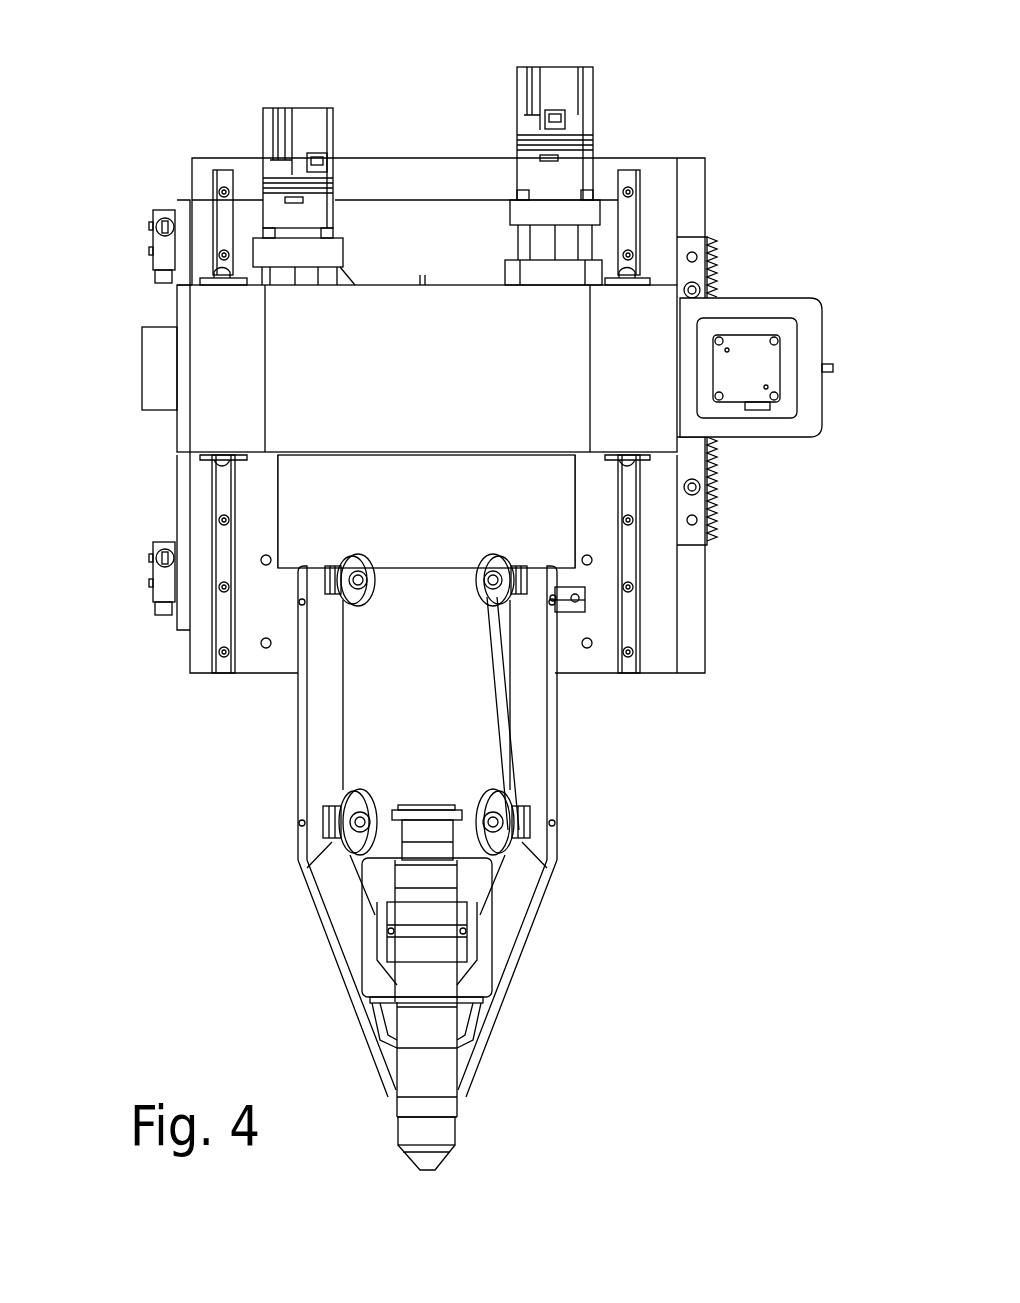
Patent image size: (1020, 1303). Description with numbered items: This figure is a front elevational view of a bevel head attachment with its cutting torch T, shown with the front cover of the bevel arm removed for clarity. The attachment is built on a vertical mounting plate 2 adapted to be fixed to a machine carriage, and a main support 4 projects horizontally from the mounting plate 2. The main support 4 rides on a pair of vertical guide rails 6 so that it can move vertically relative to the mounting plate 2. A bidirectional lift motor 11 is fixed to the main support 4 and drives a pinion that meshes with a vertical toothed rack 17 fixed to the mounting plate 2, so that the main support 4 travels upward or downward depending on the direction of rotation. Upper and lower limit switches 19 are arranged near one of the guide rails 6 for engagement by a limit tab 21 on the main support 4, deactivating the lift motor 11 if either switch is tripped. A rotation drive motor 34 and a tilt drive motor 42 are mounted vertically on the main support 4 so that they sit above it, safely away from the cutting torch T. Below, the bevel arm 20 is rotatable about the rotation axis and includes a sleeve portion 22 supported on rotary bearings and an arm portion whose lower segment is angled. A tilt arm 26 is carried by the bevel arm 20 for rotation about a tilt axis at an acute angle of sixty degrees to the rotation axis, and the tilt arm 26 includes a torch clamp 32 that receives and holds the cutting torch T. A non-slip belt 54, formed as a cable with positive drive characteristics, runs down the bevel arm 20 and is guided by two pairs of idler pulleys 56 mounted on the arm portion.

The vertical mounting plate 2 is at (381, 158).
The main support 4 is at (418, 383).
The vertical guide rails 6 is at (218, 213).
The bidirectional lift motor 11 is at (740, 348).
The vertical toothed rack 17 is at (717, 465).
The limit switches 19 is at (150, 222).
The bevel arm 20 is at (552, 752).
The limit tab 21 is at (140, 365).
The sleeve portion 22 is at (441, 520).
The tilt arm 26 is at (373, 902).
The torch clamp 32 is at (452, 912).
The rotation drive motor 34 is at (303, 120).
The tilt drive motor 42 is at (553, 75).
The non-slip belt 54 is at (495, 680).
The idler pulleys 56 is at (483, 590).
The cutting torch T is at (450, 1133).